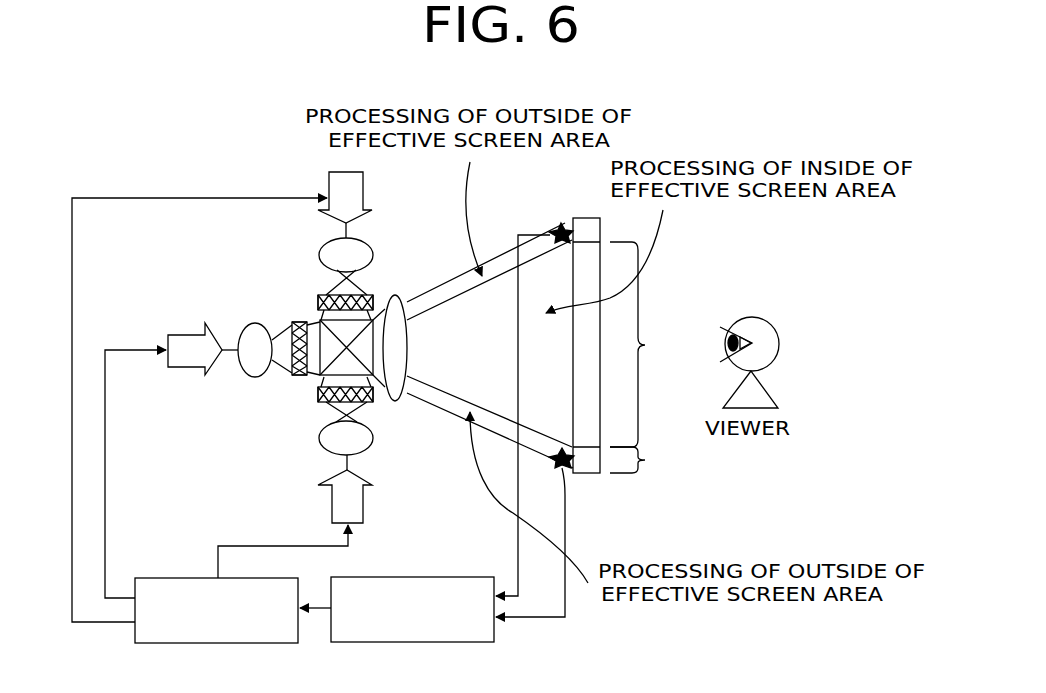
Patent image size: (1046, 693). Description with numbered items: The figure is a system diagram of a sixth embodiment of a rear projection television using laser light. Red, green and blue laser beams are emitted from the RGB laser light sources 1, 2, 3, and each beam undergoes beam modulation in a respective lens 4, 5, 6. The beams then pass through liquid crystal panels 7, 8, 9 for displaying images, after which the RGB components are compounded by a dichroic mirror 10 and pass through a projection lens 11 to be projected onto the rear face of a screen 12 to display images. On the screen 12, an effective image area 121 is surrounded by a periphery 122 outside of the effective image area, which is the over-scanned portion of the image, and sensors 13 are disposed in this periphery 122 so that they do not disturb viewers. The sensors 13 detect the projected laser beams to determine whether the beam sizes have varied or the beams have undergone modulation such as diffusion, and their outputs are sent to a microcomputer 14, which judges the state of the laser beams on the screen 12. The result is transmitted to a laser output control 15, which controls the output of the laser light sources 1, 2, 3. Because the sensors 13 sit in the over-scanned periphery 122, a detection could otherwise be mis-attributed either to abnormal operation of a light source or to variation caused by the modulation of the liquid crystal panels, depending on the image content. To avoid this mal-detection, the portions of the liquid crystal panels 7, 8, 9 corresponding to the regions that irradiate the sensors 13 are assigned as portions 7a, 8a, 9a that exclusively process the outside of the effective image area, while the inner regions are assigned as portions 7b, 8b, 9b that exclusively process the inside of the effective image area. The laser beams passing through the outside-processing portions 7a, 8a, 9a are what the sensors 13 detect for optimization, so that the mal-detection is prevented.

The R laser light source 1 is at (200, 333).
The G laser light source 2 is at (363, 190).
The B laser light source 3 is at (330, 505).
The lens 4 is at (240, 356).
The lens 5 is at (332, 243).
The lens 6 is at (372, 447).
The liquid crystal panel 7 is at (283, 326).
The portion processing exclusively the outside of the effective image area 7a is at (298, 322).
The portion processing exclusively the inside of the effective image area 7b is at (291, 374).
The liquid crystal panel 8 is at (379, 291).
The portion processing exclusively the outside of the effective image area 8a is at (324, 296).
The portion processing exclusively the inside of the effective image area 8b is at (368, 294).
The liquid crystal panel 9 is at (381, 398).
The portion processing exclusively the outside of the effective image area 9a is at (323, 397).
The portion processing exclusively the inside of the effective image area 9b is at (363, 403).
The dichroic mirror 10 is at (363, 344).
The projection lens 11 is at (412, 359).
The screen 12 is at (590, 473).
The sensor 13 is at (556, 230).
The microcomputer 14 is at (415, 576).
The laser output control 15 is at (184, 578).
The effective image area 121 is at (652, 344).
The periphery outside of the effective image area 122 is at (651, 460).